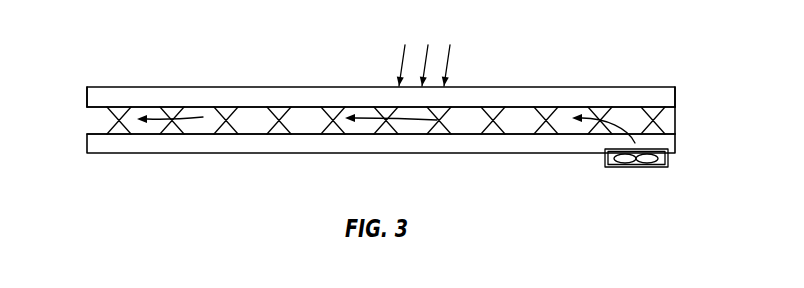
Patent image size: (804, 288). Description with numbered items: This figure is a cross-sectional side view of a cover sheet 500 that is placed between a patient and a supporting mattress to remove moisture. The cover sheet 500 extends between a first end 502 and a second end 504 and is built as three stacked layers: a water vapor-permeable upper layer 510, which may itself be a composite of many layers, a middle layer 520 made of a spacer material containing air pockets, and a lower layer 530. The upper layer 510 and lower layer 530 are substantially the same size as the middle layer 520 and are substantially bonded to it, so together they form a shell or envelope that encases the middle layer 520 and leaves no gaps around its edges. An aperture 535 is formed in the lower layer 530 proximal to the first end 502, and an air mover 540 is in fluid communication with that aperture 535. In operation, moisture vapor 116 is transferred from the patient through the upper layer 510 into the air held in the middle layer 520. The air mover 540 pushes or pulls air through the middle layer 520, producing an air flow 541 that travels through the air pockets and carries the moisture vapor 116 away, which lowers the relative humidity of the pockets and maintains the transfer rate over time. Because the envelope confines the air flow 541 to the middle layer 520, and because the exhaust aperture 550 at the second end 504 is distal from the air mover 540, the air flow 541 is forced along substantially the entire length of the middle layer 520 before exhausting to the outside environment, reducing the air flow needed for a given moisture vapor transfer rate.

The cover sheet 500 is at (173, 65).
The first end 502 is at (643, 87).
The second end 504 is at (90, 87).
The upper layer 510 is at (333, 86).
The middle layer 520 is at (107, 119).
The lower layer 530 is at (188, 153).
The aperture 535 is at (617, 142).
The air mover 540 is at (637, 167).
The air flow 541 is at (568, 134).
The aperture 550 is at (87, 127).
The moisture vapor 116 is at (423, 53).